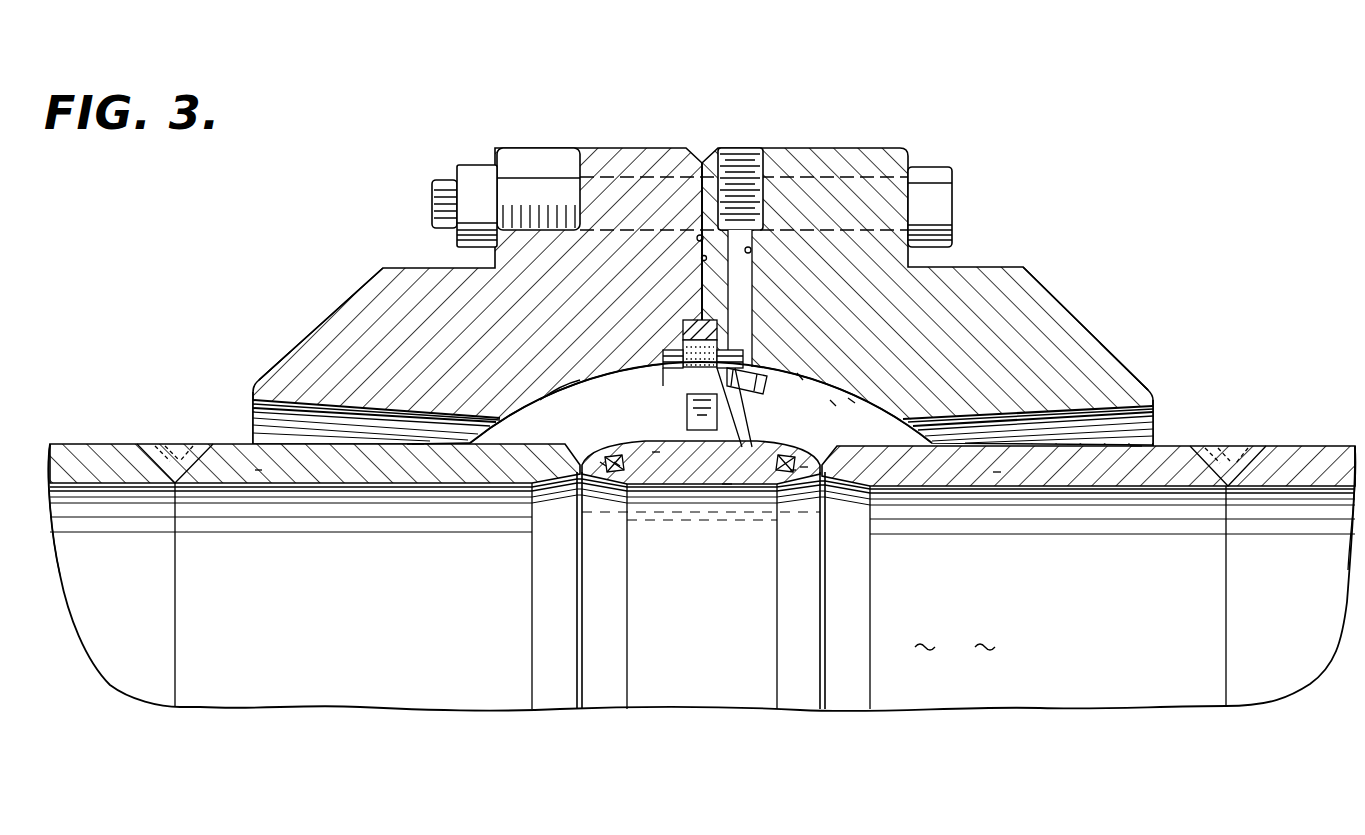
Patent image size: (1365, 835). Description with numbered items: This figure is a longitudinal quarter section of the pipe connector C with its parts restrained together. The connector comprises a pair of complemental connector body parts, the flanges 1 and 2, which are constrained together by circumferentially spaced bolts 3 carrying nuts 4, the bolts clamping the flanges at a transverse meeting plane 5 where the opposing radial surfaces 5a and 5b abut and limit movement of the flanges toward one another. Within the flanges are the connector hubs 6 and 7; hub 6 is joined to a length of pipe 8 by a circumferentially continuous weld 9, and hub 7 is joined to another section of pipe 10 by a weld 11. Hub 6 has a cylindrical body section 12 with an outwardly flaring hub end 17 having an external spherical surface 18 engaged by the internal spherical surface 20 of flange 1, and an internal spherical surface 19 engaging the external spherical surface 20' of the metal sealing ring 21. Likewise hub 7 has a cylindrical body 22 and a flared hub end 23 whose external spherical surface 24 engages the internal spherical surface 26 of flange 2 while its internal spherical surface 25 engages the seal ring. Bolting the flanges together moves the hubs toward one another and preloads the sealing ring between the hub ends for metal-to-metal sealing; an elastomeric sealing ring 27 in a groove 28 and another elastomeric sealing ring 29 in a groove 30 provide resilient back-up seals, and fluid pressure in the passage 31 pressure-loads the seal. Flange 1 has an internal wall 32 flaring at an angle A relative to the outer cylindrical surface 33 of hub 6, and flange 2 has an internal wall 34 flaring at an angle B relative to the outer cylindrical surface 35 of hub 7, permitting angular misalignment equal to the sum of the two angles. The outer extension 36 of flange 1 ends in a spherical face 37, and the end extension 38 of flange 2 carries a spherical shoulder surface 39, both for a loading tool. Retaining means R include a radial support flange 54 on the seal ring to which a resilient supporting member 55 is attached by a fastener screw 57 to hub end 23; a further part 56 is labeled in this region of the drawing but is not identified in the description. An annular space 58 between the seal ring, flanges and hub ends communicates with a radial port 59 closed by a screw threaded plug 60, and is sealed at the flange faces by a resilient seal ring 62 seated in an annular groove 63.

The connector body part (connector flange) 1 is at (355, 279).
The connector body part (connector flange) 2 is at (1050, 285).
The bolts 3 is at (530, 185).
The nuts 4 is at (460, 165).
The transverse meeting plane 5 is at (703, 185).
The radial surface (flange face) 5a is at (704, 258).
The radial surface (flange face) 5b is at (700, 240).
The connector hub 6 is at (352, 490).
The connector hub 7 is at (1070, 494).
The pipe 8 is at (70, 443).
The weld 9 is at (165, 443).
The pipe 10 is at (1330, 460).
The weld 11 is at (1228, 458).
The cylindrical body section 12 is at (258, 470).
The hub end 17 is at (607, 377).
The external spherical surface 18 is at (573, 385).
The internal spherical surface 19 is at (603, 463).
The internal spherical surface 20 is at (471, 386).
The external spherical surface 20' is at (660, 504).
The metal sealing ring 21 is at (727, 482).
The cylindrical body 22 is at (997, 472).
The hub end 23 is at (830, 400).
The external spherical surface 24 is at (848, 398).
The internal spherical surface 25 is at (807, 467).
The internal spherical surface 26 is at (797, 373).
The elastomeric sealing ring 27 is at (615, 460).
The groove 28 is at (617, 462).
The elastomeric sealing ring 29 is at (788, 455).
The groove 30 is at (793, 470).
The passage 31 is at (955, 646).
The internal wall 32 is at (322, 410).
The outer cylindrical surface 33 is at (416, 448).
The internal wall 34 is at (978, 418).
The outer cylindrical surface 35 is at (1135, 448).
The outer extension 36 is at (357, 320).
The shoulder or face 37 is at (290, 350).
The end extension 38 is at (1088, 352).
The end shoulder surface 39 is at (1067, 303).
The radial support flange 54 is at (696, 447).
The resilient supporting member 55 is at (712, 369).
The insert 56 is at (745, 446).
The fastener screw 57 is at (748, 368).
The annular space (chamber) 58 is at (663, 388).
The radial port 59 is at (750, 250).
The screw threaded plug 60 is at (745, 150).
The resilient seal ring 62 is at (690, 320).
The annular groove 63 is at (720, 342).
The angle A is at (355, 443).
The angle B is at (1058, 446).
The pipe connector C is at (995, 130).
The retaining means R is at (688, 389).